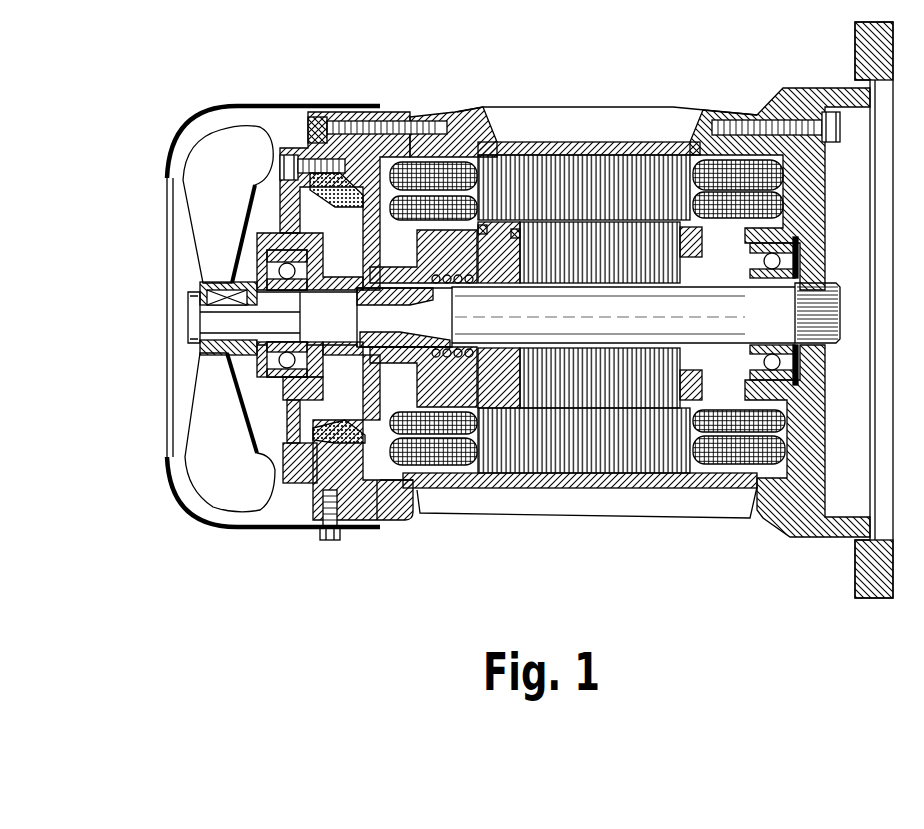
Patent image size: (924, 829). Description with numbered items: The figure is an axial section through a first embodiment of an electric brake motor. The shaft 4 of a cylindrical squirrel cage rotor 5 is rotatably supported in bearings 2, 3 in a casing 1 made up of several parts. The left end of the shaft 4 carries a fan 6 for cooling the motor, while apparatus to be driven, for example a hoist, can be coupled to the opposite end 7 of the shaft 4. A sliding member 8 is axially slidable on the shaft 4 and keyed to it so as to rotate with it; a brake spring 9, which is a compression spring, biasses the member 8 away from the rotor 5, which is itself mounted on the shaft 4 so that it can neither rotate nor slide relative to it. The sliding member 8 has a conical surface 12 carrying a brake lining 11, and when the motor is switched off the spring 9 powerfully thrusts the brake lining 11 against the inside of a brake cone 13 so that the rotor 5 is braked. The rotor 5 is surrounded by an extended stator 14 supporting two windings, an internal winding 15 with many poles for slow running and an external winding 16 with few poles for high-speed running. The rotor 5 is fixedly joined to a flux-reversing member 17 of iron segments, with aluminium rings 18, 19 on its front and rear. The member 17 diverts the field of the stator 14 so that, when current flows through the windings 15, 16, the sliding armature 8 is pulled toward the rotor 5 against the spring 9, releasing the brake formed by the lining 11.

The casing 1 is at (626, 96).
The bearing 2 is at (305, 272).
The bearing 3 is at (763, 258).
The shaft 4 is at (598, 315).
The squirrel cage rotor 5 is at (617, 383).
The fan 6 is at (205, 412).
The opposite end of the shaft 7 is at (823, 292).
The sliding member 8 is at (440, 377).
The brake spring 9 is at (462, 283).
The brake lining 11 is at (381, 483).
The conical surface 12 is at (340, 437).
The brake cone 13 is at (360, 495).
The extended stator 14 is at (570, 443).
The internal winding 15 is at (410, 416).
The external winding 16 is at (408, 455).
The flux-reversing member 17 is at (500, 420).
The ring 18 is at (483, 226).
The ring 19 is at (515, 230).